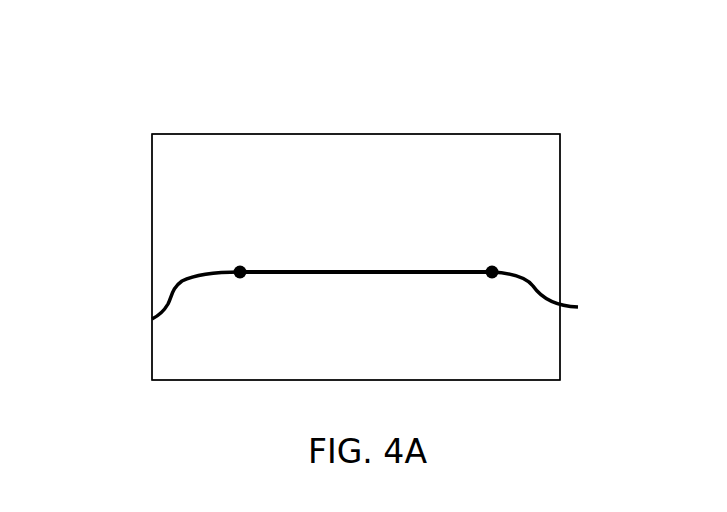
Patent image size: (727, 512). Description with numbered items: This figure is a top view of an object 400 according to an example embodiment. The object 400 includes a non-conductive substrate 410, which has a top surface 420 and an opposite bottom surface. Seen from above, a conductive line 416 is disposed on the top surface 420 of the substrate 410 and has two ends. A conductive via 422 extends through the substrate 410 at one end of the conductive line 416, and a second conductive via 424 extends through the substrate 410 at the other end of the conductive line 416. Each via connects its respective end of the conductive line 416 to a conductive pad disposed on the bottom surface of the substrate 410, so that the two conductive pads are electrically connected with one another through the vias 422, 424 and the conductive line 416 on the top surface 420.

The object 400 is at (146, 102).
The non-conductive substrate 410 is at (513, 157).
The conductive line 416 is at (353, 268).
The top surface 420 is at (515, 353).
The conductive via 422 is at (152, 319).
The conductive via 424 is at (564, 296).